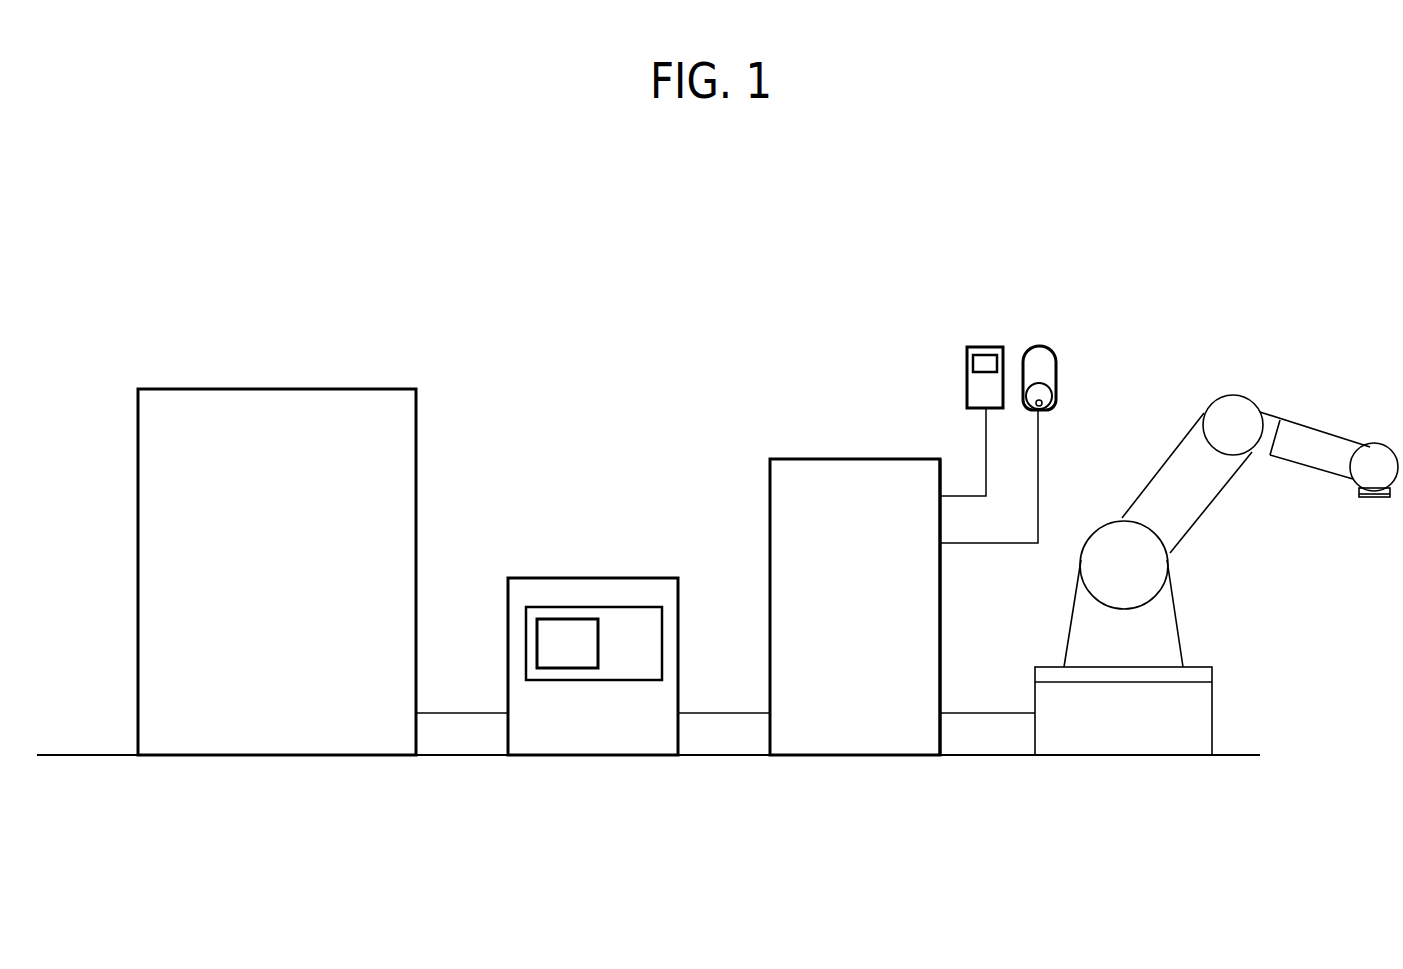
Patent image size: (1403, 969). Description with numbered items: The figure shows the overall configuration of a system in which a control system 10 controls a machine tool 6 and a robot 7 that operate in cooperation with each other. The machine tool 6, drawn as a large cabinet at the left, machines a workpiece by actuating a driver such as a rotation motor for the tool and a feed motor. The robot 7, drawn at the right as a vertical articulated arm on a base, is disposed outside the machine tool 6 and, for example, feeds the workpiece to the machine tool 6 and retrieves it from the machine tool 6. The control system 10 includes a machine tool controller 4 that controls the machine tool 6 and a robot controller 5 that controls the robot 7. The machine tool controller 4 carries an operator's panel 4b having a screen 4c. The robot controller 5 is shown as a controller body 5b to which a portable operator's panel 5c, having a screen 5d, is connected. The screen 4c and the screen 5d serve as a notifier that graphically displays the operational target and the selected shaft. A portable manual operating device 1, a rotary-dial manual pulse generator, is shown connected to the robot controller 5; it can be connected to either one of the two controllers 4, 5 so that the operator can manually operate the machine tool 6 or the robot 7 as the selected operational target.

The manual operating device 1 is at (1037, 346).
The machine tool controller 4 is at (596, 578).
The operator's panel 4b is at (632, 607).
The screen 4c is at (550, 619).
The robot controller 5 is at (843, 459).
The controller body 5b is at (941, 597).
The portable operator's panel 5c is at (982, 347).
The screen 5d is at (973, 362).
The machine tool 6 is at (278, 389).
The robot 7 is at (1177, 407).
The control system 10 is at (665, 317).